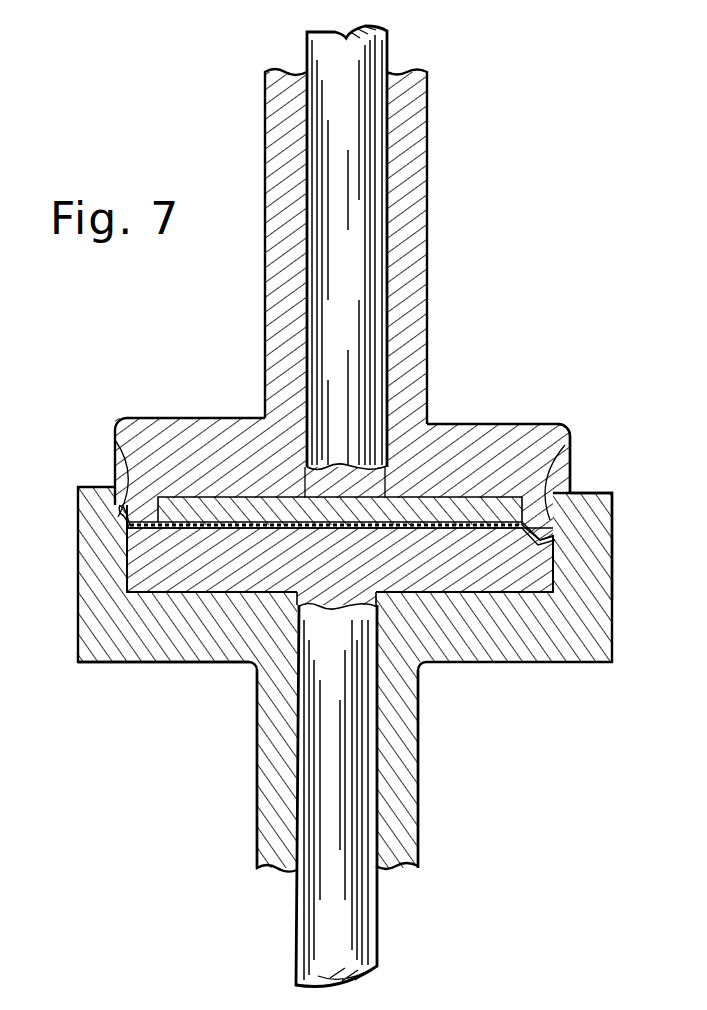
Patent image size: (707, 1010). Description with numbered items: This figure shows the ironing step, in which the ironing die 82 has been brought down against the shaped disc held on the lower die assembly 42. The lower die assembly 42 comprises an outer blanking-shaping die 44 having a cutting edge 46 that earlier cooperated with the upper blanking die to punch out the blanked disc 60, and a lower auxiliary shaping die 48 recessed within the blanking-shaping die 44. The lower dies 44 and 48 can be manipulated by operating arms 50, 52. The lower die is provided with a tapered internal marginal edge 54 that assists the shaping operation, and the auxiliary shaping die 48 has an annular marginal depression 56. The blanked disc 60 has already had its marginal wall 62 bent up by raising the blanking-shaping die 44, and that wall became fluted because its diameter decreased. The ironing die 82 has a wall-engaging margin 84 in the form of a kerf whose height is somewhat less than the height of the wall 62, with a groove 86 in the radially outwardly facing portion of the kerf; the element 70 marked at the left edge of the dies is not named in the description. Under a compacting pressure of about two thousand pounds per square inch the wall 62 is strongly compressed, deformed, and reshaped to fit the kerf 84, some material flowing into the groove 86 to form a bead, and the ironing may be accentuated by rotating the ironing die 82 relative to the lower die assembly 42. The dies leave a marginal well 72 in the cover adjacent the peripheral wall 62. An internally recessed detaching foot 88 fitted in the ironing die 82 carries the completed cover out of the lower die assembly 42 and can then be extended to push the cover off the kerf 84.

The lower die assembly 42 is at (250, 679).
The outer blanking-shaping die 44 is at (597, 565).
The cutting edge 46 is at (612, 503).
The lower auxiliary shaping die 48 is at (160, 585).
The operating arm 50 is at (405, 718).
The operating arm 52 is at (315, 926).
The tapered internal marginal edge 54 is at (128, 522).
The annular marginal depression 56 is at (552, 545).
The blanked disc 60 is at (127, 573).
The marginal wall 62 is at (122, 518).
The left lip 70 is at (118, 456).
The marginal well 72 is at (555, 538).
The ironing die 82 is at (485, 440).
The wall-engaging margin 84 is at (571, 481).
The groove 86 is at (571, 455).
The detaching foot 88 is at (222, 505).